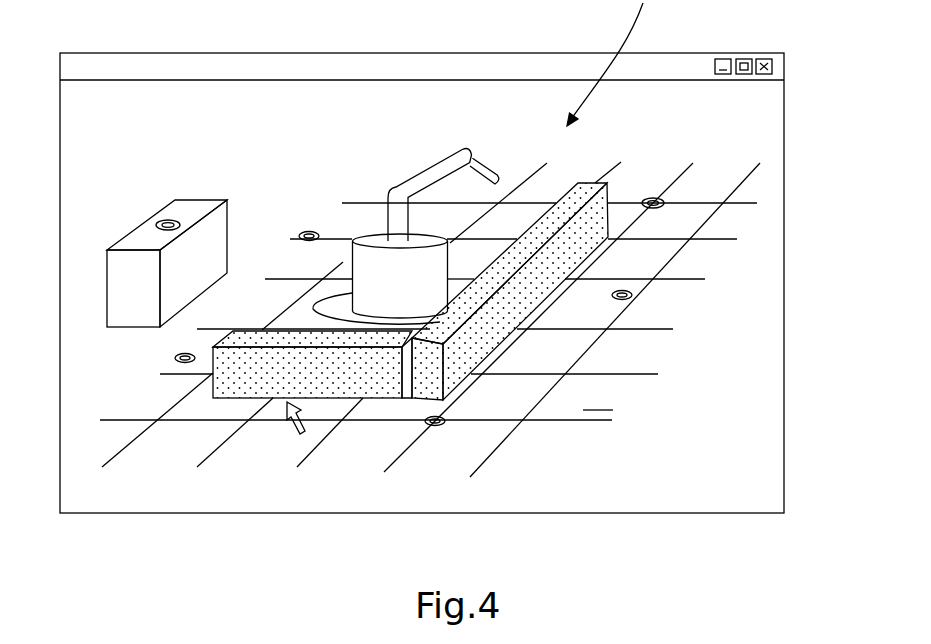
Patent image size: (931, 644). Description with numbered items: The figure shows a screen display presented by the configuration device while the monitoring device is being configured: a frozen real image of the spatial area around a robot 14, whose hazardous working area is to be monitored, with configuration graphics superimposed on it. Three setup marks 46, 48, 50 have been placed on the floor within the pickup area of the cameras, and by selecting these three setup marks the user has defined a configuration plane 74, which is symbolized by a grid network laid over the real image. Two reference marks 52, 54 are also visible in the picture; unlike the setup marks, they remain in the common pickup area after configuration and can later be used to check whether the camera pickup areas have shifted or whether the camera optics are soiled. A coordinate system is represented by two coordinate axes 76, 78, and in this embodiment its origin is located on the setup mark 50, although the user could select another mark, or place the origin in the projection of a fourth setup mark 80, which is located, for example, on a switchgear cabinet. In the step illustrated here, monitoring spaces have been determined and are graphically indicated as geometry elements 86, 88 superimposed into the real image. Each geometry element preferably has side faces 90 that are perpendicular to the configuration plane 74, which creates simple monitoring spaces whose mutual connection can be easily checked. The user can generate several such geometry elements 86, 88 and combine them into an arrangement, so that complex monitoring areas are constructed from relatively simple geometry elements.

The robot 14 is at (428, 177).
The setup mark 46 is at (653, 198).
The setup mark 48 is at (175, 360).
The setup mark 50 is at (442, 425).
The reference mark 52 is at (306, 232).
The reference mark 54 is at (633, 295).
The configuration plane 74 is at (598, 400).
The coordinate axis 76 is at (593, 421).
The coordinate axis 78 is at (388, 469).
The fourth setup mark 80 is at (155, 218).
The geometry element 86 is at (502, 318).
The geometry element 88 is at (230, 390).
The side faces 90 is at (573, 250).